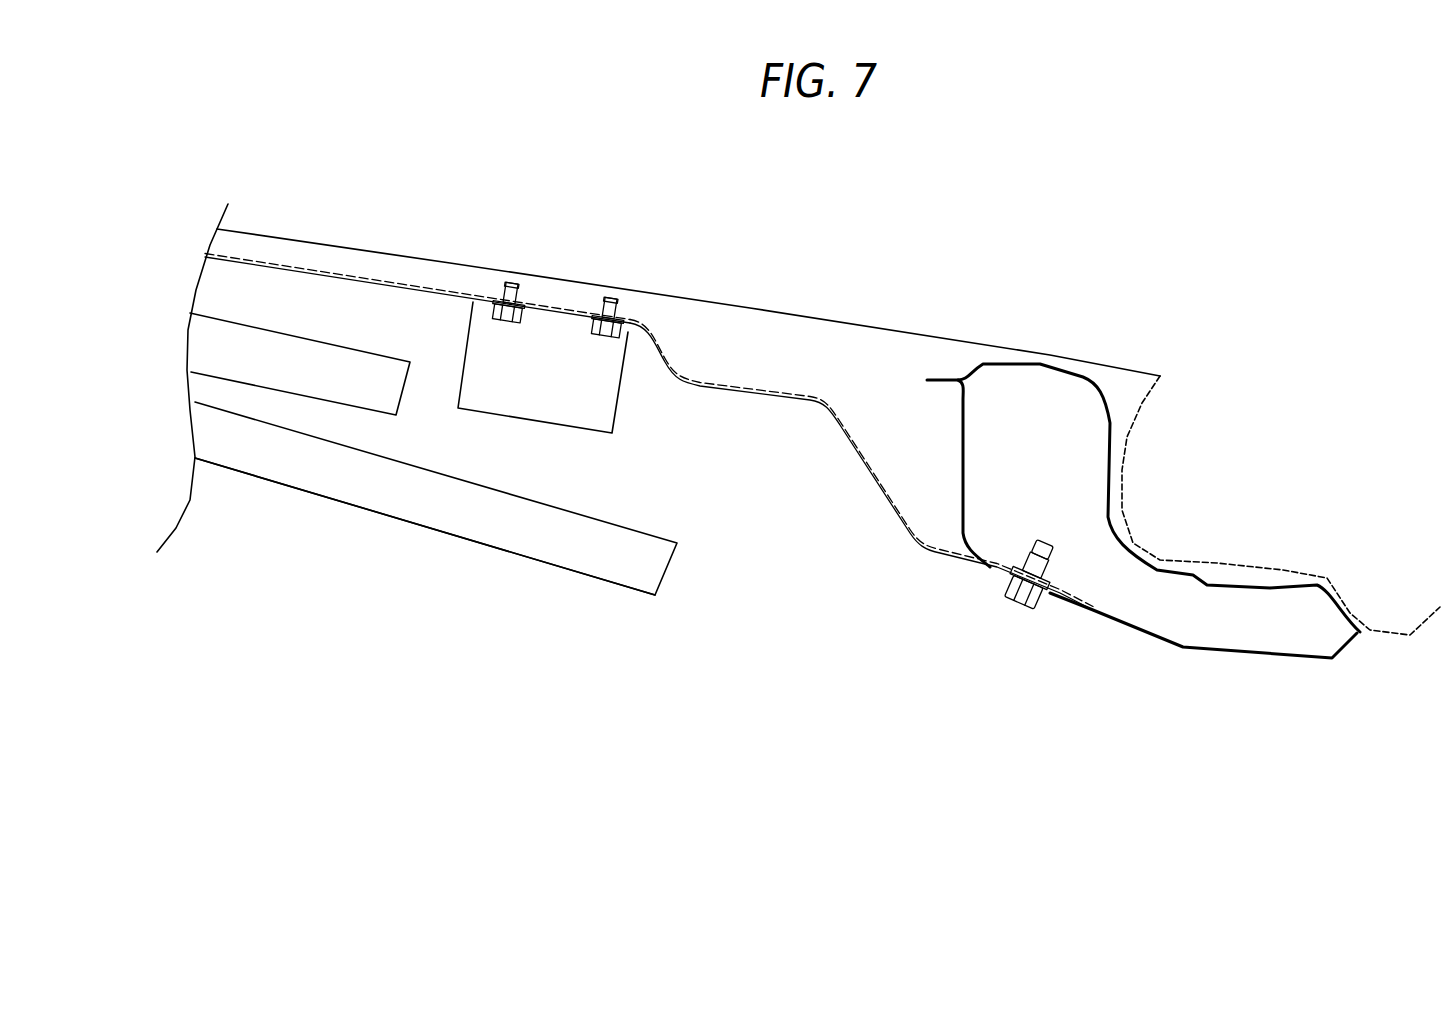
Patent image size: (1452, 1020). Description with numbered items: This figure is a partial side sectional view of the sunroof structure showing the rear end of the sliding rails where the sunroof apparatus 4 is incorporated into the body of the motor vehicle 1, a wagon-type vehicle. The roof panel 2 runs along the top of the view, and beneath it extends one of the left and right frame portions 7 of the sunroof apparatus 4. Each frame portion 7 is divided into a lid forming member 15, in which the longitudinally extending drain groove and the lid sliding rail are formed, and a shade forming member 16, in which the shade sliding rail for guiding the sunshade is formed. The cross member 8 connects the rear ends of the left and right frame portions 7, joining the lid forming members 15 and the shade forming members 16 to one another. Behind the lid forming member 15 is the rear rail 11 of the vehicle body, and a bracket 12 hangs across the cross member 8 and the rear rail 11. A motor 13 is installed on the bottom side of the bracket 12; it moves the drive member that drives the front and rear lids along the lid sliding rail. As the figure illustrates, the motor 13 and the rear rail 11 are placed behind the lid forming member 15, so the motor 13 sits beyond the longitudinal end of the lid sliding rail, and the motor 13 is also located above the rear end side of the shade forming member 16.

The motor vehicle 1 is at (798, 440).
The roof panel 2 is at (827, 318).
The sunroof apparatus 4 is at (547, 592).
The frame portion 7 is at (222, 473).
The cross member 8 is at (312, 273).
The rear rail 11 is at (1035, 352).
The bracket 12 is at (720, 382).
The motor 13 is at (555, 327).
The lid forming member 15 is at (258, 367).
The shade forming member 16 is at (457, 520).